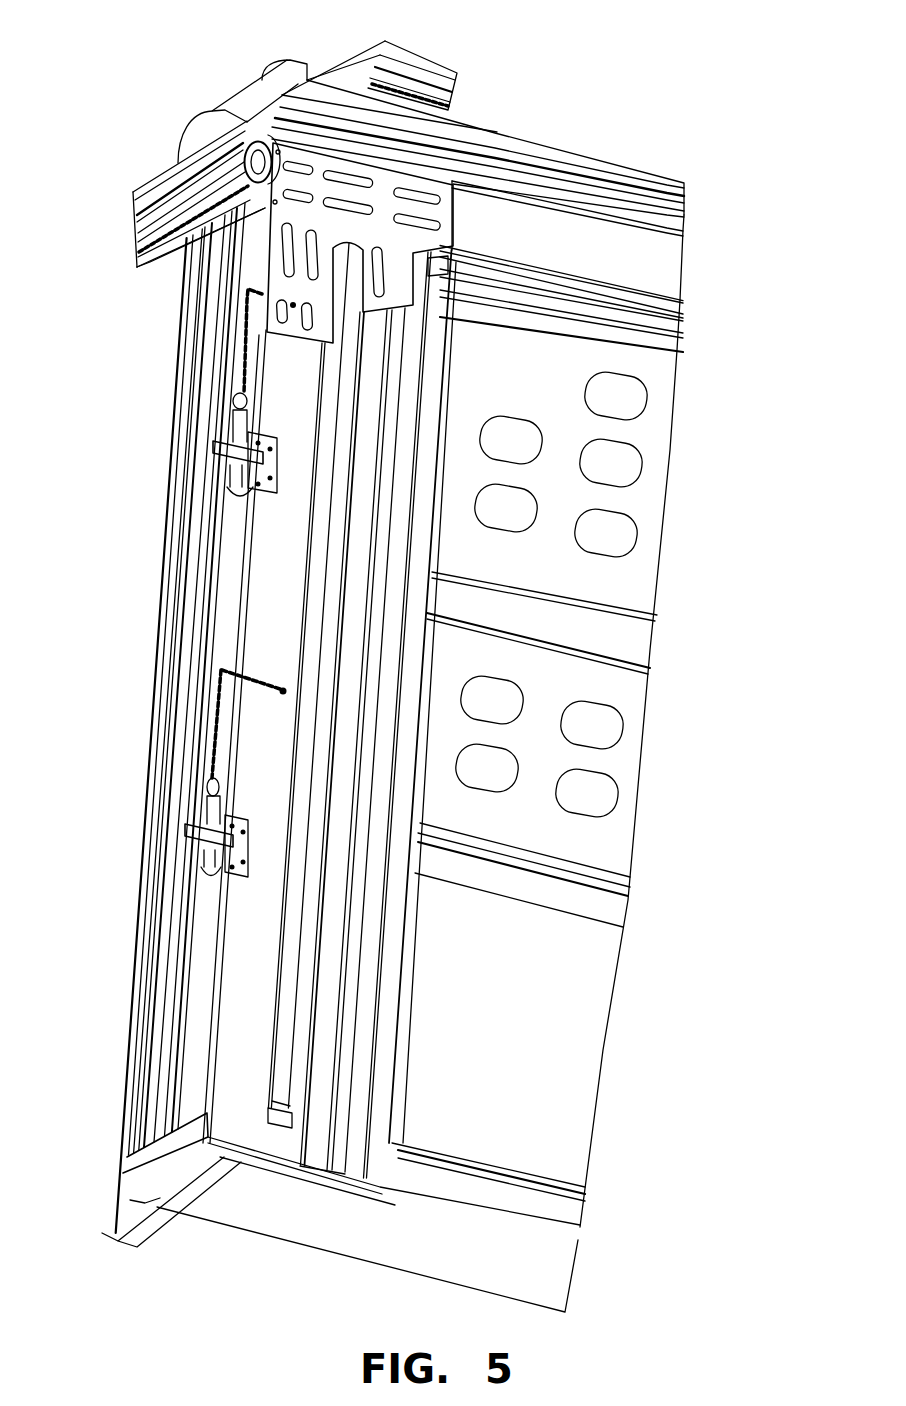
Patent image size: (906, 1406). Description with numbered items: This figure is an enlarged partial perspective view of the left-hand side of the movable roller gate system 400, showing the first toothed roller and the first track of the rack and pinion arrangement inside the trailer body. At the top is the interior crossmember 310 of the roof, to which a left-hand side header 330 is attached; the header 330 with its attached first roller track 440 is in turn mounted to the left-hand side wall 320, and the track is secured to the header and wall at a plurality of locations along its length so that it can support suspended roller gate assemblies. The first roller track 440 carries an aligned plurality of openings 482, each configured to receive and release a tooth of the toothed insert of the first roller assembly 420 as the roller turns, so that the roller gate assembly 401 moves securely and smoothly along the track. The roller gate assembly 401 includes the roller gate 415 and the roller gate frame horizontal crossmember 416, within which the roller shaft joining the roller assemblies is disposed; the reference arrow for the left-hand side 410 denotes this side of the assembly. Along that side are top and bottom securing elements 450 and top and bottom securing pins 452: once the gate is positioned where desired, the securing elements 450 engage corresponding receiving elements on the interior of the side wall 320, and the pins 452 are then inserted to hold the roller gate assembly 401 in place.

The interior crossmember 310 is at (490, 148).
The left-hand side wall 320 is at (160, 657).
The left-hand side header 330 is at (245, 140).
The movable roller gate system 400 is at (702, 268).
The roller gate assembly 401 is at (630, 248).
The left-hand side of the roller gate assembly 410 is at (294, 146).
The roller gate 415 is at (587, 1023).
The roller gate frame horizontal crossmember 416 is at (588, 238).
The first roller assembly 420 is at (232, 167).
The first roller track 440 is at (157, 263).
The top and bottom securing elements 450 is at (247, 495).
The top and bottom securing pins 452 is at (240, 427).
The openings 482 is at (157, 240).